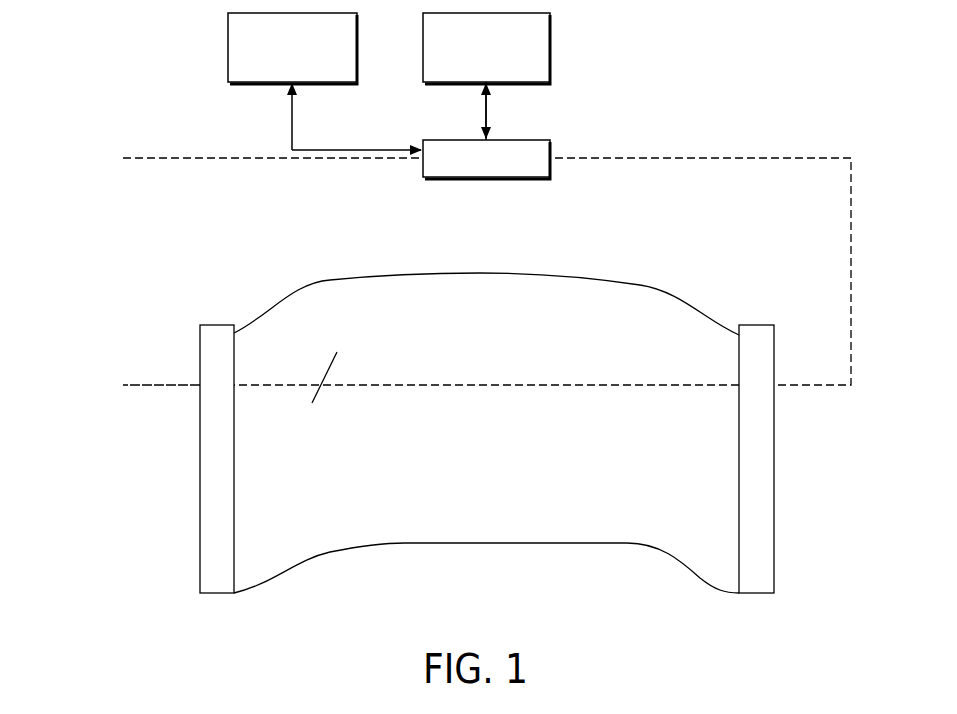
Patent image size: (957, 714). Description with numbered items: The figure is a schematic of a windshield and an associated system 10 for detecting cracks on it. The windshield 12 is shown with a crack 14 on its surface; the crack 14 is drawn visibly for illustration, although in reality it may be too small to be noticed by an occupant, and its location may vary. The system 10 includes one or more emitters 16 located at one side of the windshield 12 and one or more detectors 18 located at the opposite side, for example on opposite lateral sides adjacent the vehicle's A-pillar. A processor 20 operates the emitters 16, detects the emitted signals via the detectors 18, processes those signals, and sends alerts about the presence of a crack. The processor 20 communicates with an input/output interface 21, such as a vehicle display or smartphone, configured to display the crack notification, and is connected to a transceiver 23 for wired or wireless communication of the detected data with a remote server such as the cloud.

The system 10 is at (88, 183).
The windshield 12 is at (404, 520).
The crack 14 is at (330, 358).
The emitters 16 is at (218, 515).
The detectors 18 is at (752, 495).
The processor 20 is at (447, 140).
The input/output (I/O) interface 21 is at (550, 47).
The transceiver 23 is at (228, 47).